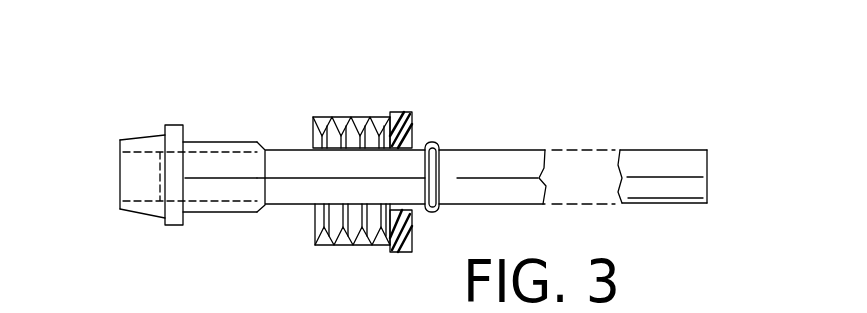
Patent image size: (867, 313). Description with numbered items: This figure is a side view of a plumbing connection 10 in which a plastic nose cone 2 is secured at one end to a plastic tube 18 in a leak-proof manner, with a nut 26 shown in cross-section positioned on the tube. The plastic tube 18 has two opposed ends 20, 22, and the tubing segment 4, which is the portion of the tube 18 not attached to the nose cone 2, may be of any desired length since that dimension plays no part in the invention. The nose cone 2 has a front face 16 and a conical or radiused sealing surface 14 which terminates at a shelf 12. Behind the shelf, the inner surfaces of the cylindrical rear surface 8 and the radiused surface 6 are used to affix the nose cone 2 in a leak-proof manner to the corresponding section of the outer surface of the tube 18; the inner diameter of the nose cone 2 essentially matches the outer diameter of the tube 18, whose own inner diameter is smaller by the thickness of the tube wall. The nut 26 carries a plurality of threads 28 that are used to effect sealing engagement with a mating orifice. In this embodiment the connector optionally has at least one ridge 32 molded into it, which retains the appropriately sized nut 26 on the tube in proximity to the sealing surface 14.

The plumbing connection 10 is at (204, 116).
The plastic nose cone 2 is at (131, 131).
The front face 16 is at (119, 162).
The opposed end 22 is at (119, 195).
The sealing surface 14 is at (140, 218).
The shelf 12 is at (173, 228).
The cylindrical rear surface 8 is at (218, 214).
The radiused surface 6 is at (266, 213).
The nut 26 is at (371, 111).
The threads 28 is at (316, 217).
The ridge 32 is at (440, 147).
The plastic tube 18 is at (510, 150).
The tubing segment 4 is at (667, 150).
The opposed end 20 is at (708, 170).